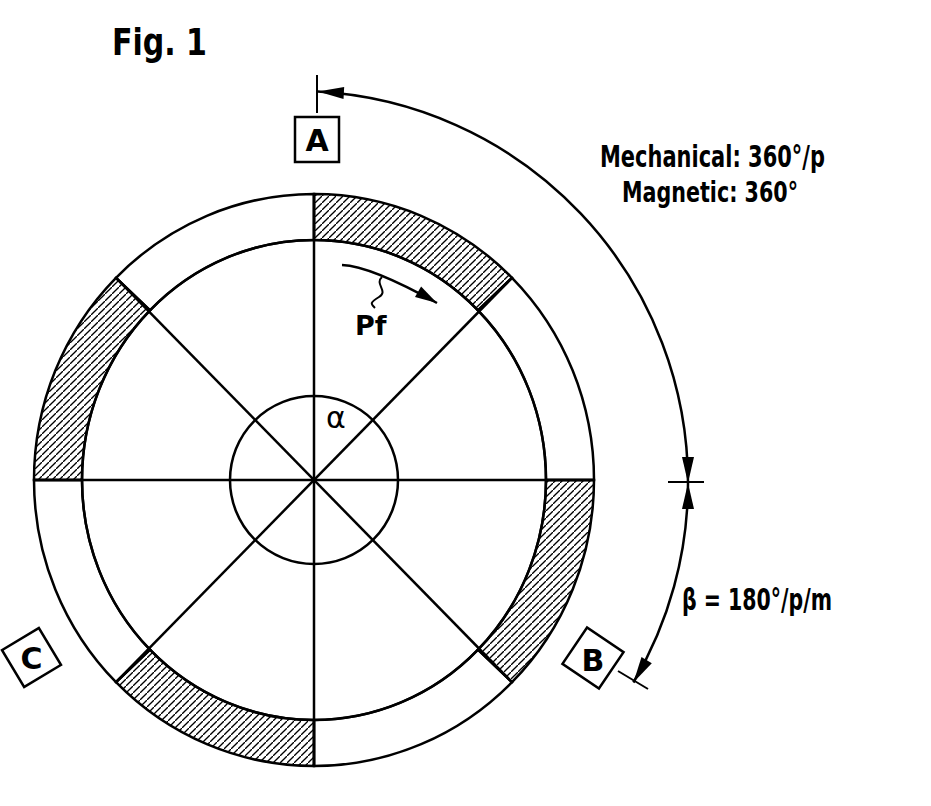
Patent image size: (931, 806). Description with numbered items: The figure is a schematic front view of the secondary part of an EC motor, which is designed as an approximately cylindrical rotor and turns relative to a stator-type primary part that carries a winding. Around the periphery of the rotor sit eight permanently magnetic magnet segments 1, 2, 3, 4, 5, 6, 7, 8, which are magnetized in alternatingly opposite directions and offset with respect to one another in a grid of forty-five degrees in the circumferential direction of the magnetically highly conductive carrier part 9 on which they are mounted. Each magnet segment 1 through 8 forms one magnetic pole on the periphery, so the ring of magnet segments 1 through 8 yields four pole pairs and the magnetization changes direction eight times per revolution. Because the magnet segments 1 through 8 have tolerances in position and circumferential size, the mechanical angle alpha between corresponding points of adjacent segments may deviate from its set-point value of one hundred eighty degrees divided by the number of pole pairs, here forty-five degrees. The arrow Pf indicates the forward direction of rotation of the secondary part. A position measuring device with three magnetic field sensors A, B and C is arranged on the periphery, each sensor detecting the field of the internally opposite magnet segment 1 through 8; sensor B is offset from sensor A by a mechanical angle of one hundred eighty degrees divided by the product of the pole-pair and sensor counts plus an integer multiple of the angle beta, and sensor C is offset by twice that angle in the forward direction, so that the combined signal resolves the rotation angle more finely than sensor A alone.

The magnet segment 1 is at (215, 252).
The magnet segment 2 is at (92, 379).
The magnet segment 3 is at (92, 581).
The magnet segment 4 is at (215, 708).
The magnet segment 5 is at (413, 708).
The magnet segment 6 is at (536, 581).
The magnet segment 7 is at (536, 379).
The magnet segment 8 is at (413, 252).
The carrier part 9 is at (350, 627).